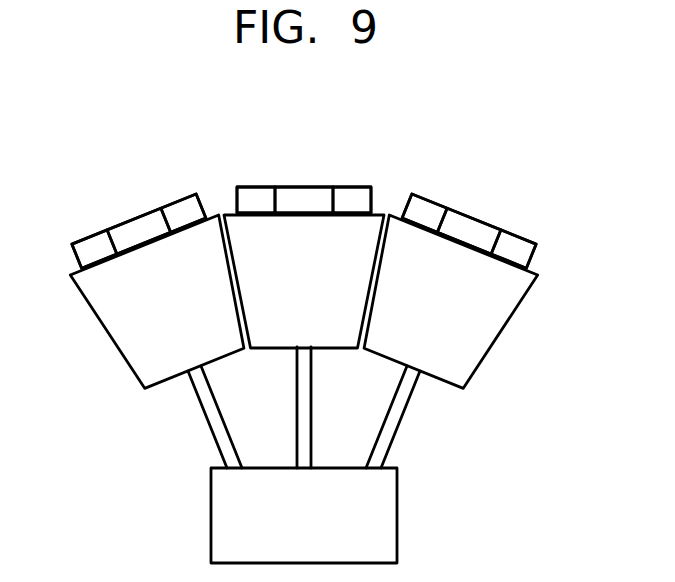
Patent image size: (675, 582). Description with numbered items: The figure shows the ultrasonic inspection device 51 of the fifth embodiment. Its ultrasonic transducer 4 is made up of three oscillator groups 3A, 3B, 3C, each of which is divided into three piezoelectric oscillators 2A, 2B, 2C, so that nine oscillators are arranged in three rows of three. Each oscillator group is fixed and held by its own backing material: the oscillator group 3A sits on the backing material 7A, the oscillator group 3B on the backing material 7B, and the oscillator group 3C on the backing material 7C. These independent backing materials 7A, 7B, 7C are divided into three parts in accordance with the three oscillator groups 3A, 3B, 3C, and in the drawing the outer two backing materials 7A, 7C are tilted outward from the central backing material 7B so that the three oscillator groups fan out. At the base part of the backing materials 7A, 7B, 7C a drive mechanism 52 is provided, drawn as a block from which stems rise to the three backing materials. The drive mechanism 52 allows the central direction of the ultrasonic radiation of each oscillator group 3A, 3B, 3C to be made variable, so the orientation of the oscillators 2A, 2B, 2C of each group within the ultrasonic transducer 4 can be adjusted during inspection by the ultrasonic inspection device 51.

The ultrasonic inspection device 51 is at (553, 130).
The ultrasonic transducer 4 is at (597, 188).
The backing material 7A is at (72, 275).
The backing material 7B is at (382, 213).
The backing material 7C is at (534, 278).
The oscillator group 3A is at (195, 146).
The oscillator group 3B is at (360, 143).
The oscillator group 3C is at (530, 148).
The oscillator 2A is at (93, 255).
The oscillator 2B is at (138, 242).
The oscillator 2C is at (187, 225).
The drive mechanism 52 is at (397, 513).